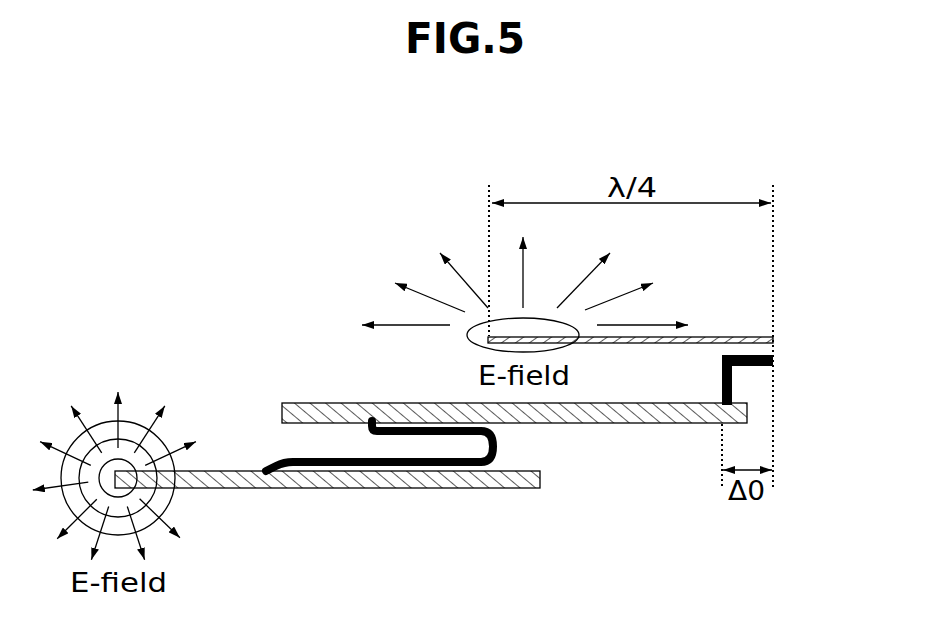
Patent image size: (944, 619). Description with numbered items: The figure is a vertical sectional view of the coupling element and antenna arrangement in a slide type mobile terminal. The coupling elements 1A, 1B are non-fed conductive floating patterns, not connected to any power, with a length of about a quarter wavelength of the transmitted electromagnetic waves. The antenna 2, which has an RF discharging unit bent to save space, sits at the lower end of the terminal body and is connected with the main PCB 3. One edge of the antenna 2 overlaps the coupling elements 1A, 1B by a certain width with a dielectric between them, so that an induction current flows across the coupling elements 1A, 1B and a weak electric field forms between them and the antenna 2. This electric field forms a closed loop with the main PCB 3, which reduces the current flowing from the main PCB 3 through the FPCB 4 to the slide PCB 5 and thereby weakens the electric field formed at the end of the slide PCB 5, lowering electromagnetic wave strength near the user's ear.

The coupling element 1A is at (692, 340).
The coupling element 1B is at (774, 340).
The antenna 2 is at (773, 362).
The main PCB 3 is at (282, 408).
The FPCB 4 is at (497, 445).
The slide PCB 5 is at (540, 480).